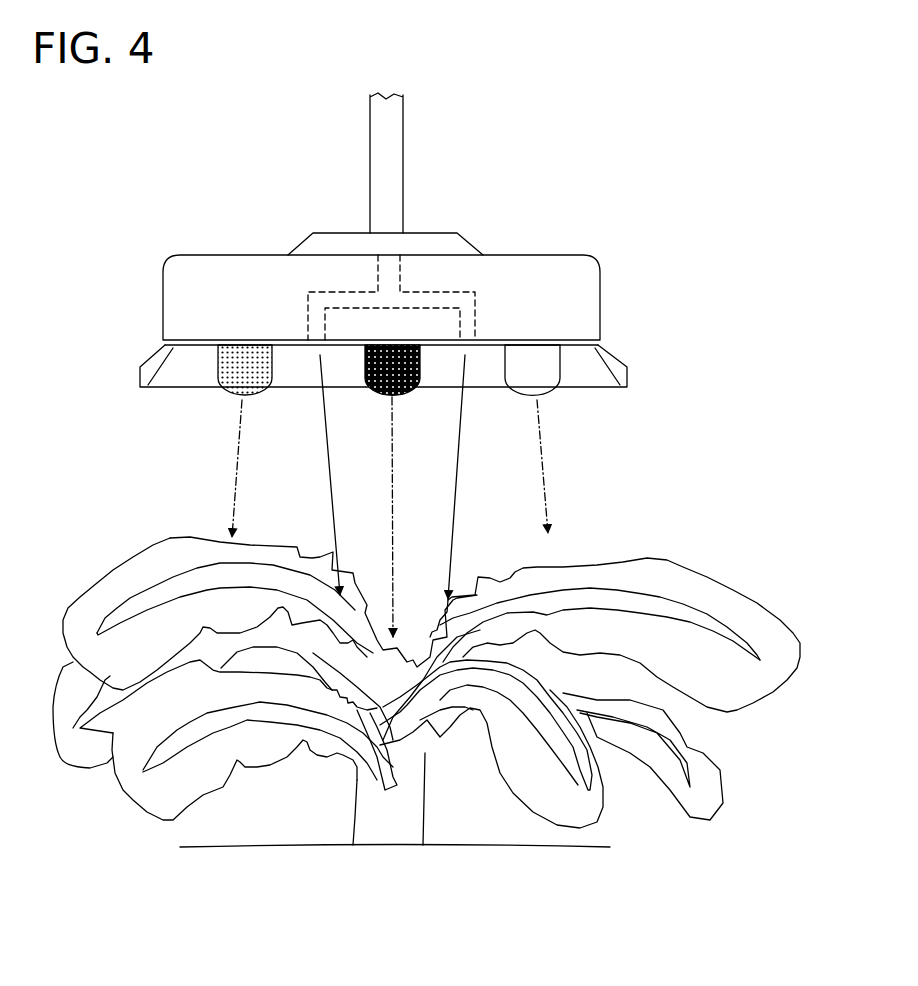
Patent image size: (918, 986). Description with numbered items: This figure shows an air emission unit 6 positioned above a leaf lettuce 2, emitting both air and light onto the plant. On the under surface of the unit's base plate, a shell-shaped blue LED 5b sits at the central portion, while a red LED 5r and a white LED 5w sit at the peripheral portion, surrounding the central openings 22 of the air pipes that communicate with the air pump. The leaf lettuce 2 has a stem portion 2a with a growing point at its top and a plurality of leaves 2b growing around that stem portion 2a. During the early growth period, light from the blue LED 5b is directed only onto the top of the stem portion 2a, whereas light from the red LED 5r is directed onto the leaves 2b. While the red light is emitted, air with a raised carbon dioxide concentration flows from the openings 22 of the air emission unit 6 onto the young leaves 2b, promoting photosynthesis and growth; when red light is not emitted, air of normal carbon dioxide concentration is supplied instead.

The leaf lettuce 2 is at (426, 657).
The stem portion 2a is at (407, 802).
The leaf 2b is at (635, 580).
The red LED 5r is at (227, 393).
The blue LED 5b is at (378, 395).
The white LED 5w is at (518, 395).
The air emission unit 6 is at (570, 267).
The openings 22 is at (318, 348).